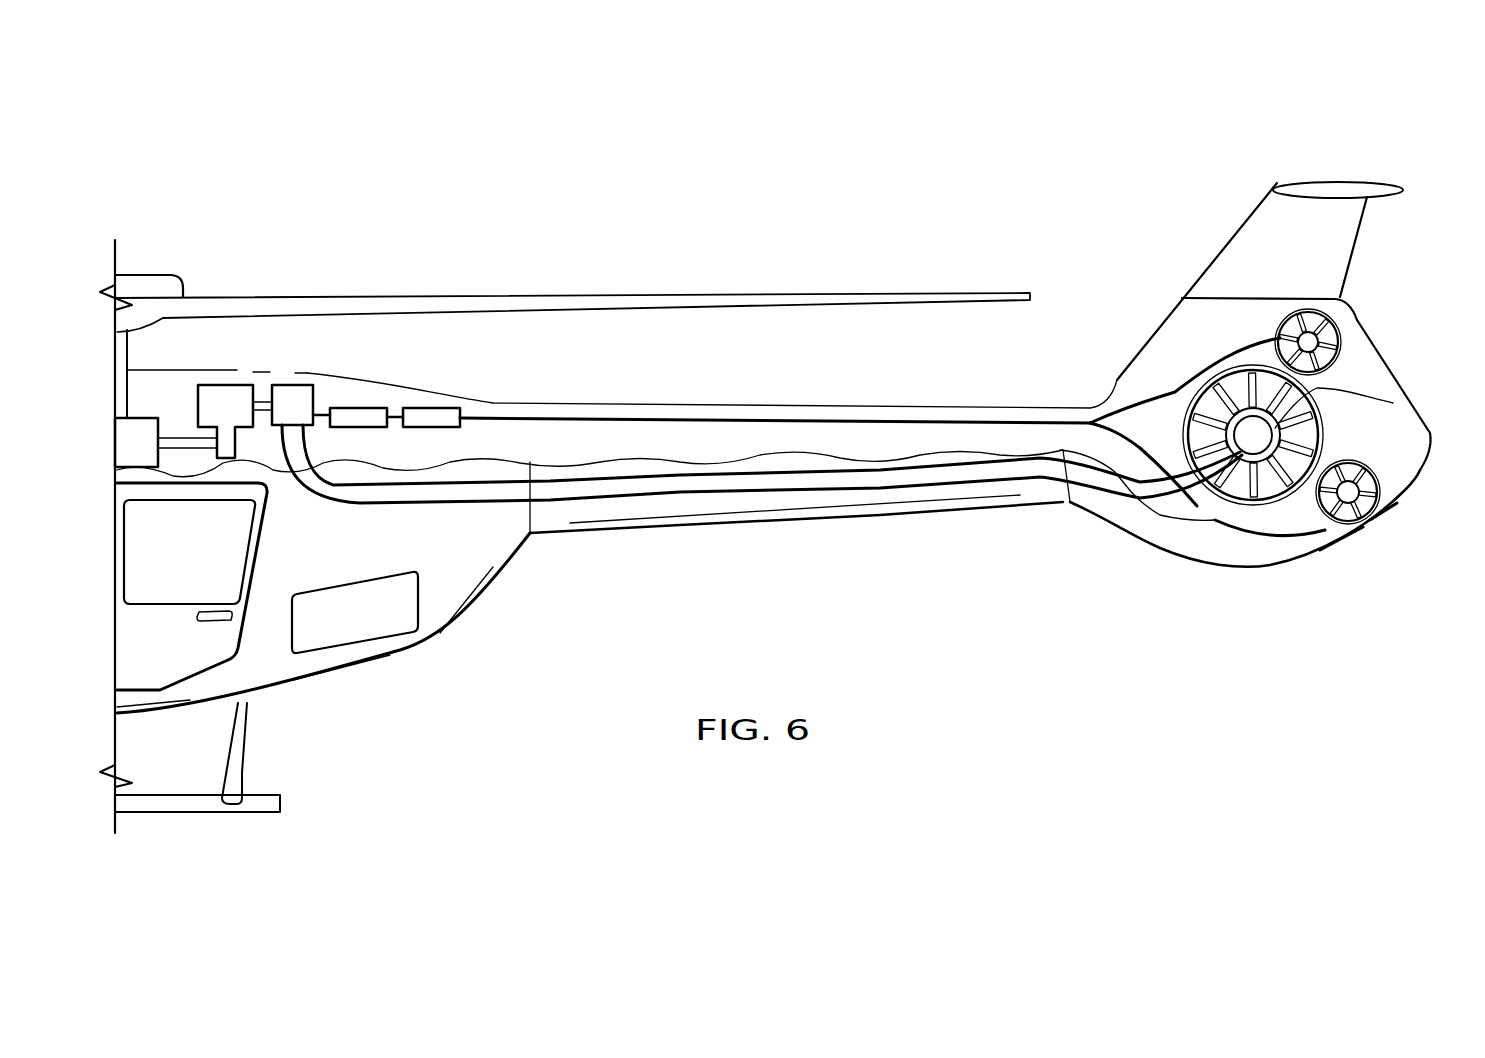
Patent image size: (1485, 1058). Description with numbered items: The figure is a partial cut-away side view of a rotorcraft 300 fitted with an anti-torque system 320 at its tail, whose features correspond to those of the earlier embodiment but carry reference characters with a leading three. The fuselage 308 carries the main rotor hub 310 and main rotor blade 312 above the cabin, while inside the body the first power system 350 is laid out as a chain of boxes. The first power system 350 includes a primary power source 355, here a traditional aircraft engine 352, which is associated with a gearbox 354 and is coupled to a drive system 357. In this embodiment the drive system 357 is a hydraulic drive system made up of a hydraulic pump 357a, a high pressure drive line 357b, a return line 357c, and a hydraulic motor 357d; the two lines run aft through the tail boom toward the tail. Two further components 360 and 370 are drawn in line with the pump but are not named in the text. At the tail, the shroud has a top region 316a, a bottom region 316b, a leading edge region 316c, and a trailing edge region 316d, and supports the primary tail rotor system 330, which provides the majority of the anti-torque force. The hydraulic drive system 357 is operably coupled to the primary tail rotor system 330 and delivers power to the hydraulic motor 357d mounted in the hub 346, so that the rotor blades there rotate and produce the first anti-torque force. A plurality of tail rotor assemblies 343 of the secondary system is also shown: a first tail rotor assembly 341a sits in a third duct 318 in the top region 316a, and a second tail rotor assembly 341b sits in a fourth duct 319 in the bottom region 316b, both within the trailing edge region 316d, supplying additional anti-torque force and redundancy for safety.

The rotorcraft 300 is at (884, 172).
The fuselage 308 is at (380, 660).
The main rotor hub 310 is at (143, 273).
The main rotor blade 312 is at (593, 297).
The top region of shroud 316a is at (1267, 297).
The bottom region of shroud 316b is at (1240, 567).
The leading edge region of shroud 316c is at (1117, 380).
The trailing edge region of shroud 316d is at (1374, 345).
The third duct 318 is at (1262, 320).
The fourth duct 319 is at (1397, 511).
The anti-torque system 320 is at (1145, 257).
The primary tail rotor system 330 is at (1205, 515).
The first tail rotor assembly 341a is at (1356, 312).
The second tail rotor assembly 341b is at (1370, 527).
The plurality of tail rotor assemblies 343 is at (1313, 582).
The hub 346 is at (1282, 437).
The first power system 350 is at (243, 362).
The aircraft engine 352 is at (198, 400).
The gearbox 354 is at (157, 462).
The primary power source 355 is at (253, 460).
The drive system 357 is at (289, 362).
The hydraulic pump 357a is at (313, 396).
The high pressure drive line 357b is at (880, 473).
The return line 357c is at (783, 492).
The hydraulic motor 357d is at (1393, 403).
The power controller 360 is at (432, 428).
The battery 370 is at (360, 428).